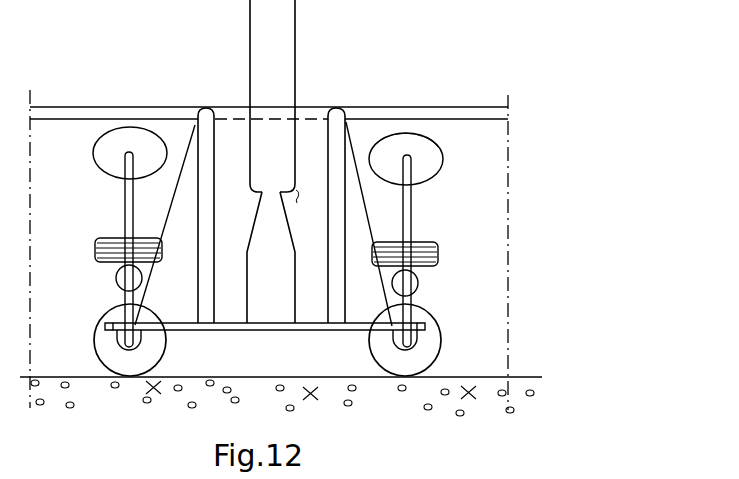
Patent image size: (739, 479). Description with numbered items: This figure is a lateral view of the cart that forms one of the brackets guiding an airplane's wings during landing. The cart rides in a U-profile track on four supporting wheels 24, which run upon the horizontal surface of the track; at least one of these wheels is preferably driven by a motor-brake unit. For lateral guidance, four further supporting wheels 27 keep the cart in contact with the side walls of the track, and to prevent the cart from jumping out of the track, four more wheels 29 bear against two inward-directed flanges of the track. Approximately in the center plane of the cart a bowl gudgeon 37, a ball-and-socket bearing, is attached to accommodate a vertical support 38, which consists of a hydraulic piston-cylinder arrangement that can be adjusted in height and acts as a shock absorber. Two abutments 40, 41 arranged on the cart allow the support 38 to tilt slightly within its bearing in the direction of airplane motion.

The supporting wheels 24 is at (108, 380).
The supporting wheels 27 is at (95, 246).
The wheels 29 is at (442, 153).
The bowl gudgeon (ball and socket) 37 is at (296, 278).
The vertical support 38 is at (298, 65).
The abutment 40 is at (327, 117).
The abutment 41 is at (216, 116).